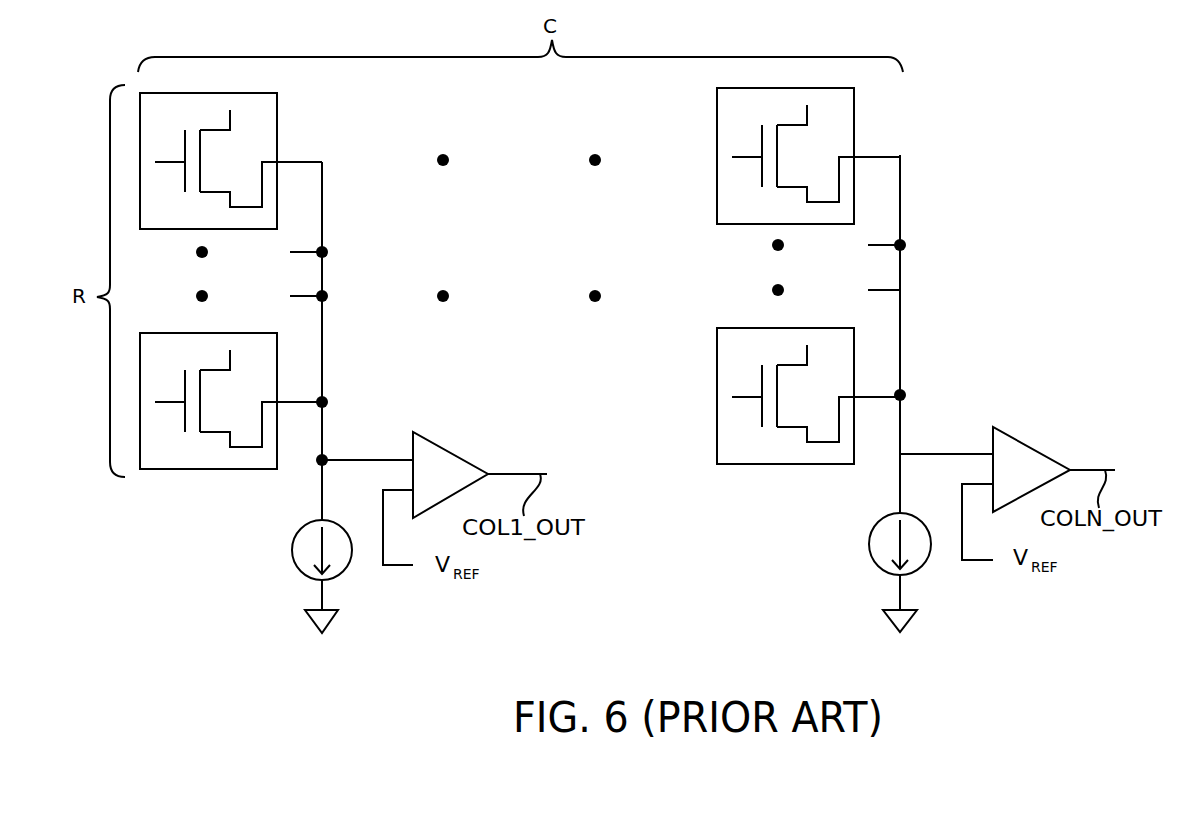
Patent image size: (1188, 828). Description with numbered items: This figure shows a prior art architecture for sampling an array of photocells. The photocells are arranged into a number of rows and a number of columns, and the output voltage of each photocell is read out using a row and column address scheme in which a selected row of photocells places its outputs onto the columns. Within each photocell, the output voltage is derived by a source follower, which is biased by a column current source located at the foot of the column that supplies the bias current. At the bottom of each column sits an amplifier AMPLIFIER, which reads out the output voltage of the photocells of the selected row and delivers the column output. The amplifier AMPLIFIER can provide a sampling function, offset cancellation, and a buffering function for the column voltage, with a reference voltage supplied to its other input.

The amplifier AMPLIFIER is at (440, 446).